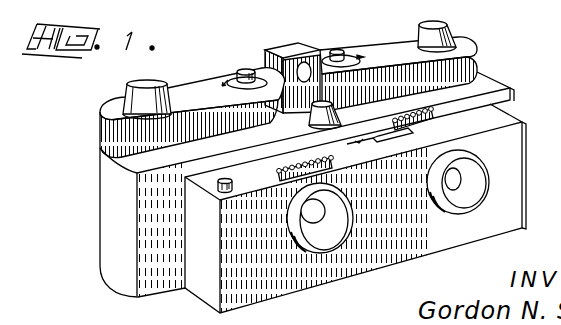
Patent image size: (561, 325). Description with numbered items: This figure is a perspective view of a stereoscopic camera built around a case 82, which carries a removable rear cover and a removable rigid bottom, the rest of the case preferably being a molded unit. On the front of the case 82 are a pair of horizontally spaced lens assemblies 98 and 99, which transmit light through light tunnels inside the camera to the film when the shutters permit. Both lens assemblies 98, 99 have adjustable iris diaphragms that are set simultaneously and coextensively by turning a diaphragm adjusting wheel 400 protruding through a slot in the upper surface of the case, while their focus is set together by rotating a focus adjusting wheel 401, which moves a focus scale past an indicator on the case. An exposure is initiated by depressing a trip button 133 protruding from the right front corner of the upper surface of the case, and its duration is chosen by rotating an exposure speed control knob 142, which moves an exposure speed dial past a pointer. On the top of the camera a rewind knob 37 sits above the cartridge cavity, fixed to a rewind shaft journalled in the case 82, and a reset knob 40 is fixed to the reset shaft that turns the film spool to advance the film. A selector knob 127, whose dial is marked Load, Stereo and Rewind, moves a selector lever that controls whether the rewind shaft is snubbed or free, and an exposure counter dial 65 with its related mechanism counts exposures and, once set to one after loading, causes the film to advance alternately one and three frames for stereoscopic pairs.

The rewind knob 37 is at (445, 23).
The reset knob 40 is at (141, 86).
The exposure counter dial 65 is at (232, 73).
The case 82 is at (505, 85).
The lens assembly 98 is at (474, 173).
The lens assembly 99 is at (323, 240).
The selector knob 127 is at (348, 52).
The trip button 133 is at (229, 178).
The exposure speed control knob 142 is at (308, 118).
The diaphragm adjusting wheel 400 is at (421, 107).
The focus adjusting wheel 401 is at (277, 172).